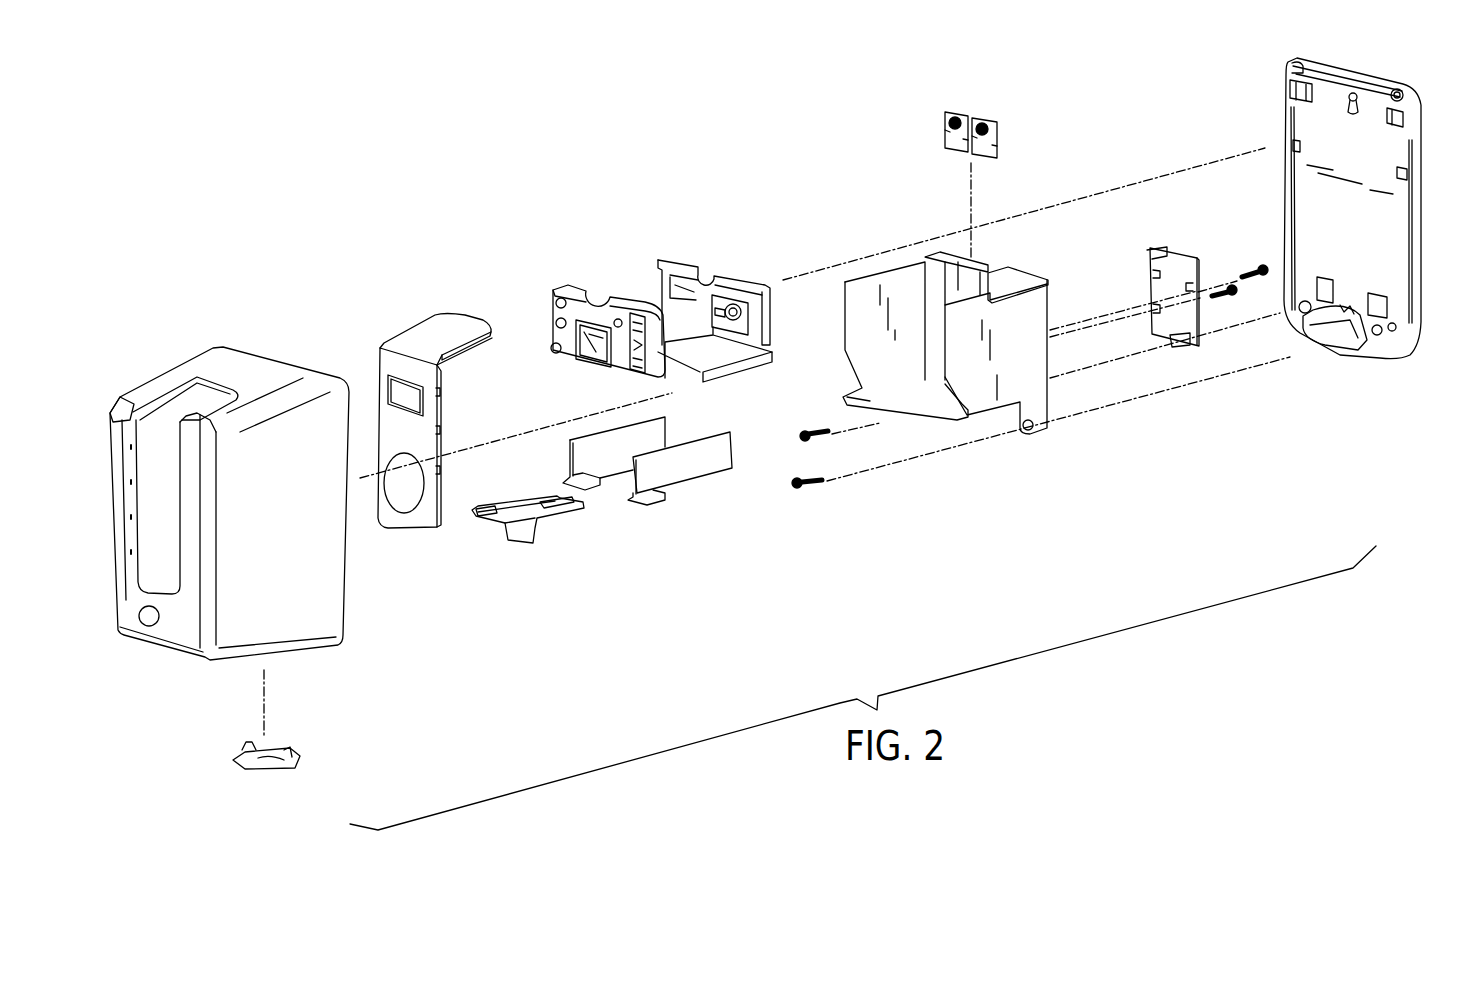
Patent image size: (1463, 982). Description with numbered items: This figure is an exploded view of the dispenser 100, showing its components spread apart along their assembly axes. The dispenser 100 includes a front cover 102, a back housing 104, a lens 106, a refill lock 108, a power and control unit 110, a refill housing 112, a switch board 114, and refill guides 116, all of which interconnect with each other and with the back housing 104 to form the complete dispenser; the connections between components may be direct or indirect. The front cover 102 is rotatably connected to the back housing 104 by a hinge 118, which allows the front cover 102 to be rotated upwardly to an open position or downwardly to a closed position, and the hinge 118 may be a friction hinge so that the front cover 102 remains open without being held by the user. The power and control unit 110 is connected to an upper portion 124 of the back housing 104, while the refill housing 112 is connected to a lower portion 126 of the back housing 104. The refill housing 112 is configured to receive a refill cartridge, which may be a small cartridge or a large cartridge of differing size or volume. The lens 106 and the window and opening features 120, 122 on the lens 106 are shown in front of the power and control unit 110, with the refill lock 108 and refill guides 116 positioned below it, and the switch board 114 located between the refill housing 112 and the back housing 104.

The dispenser 100 is at (494, 217).
The front cover 102 is at (217, 366).
The back housing 104 is at (1287, 108).
The lens 106 is at (433, 327).
The refill lock 108 is at (557, 515).
The power and control unit 110 is at (664, 267).
The refill housing 112 is at (990, 402).
The switch board 114 is at (1175, 318).
The refill guides 116 is at (680, 470).
The hinge 118 is at (1337, 68).
The display window 120 is at (386, 393).
The sensor aperture 122 is at (395, 508).
The upper portion 124 is at (1427, 122).
The lower portion 126 is at (1426, 288).